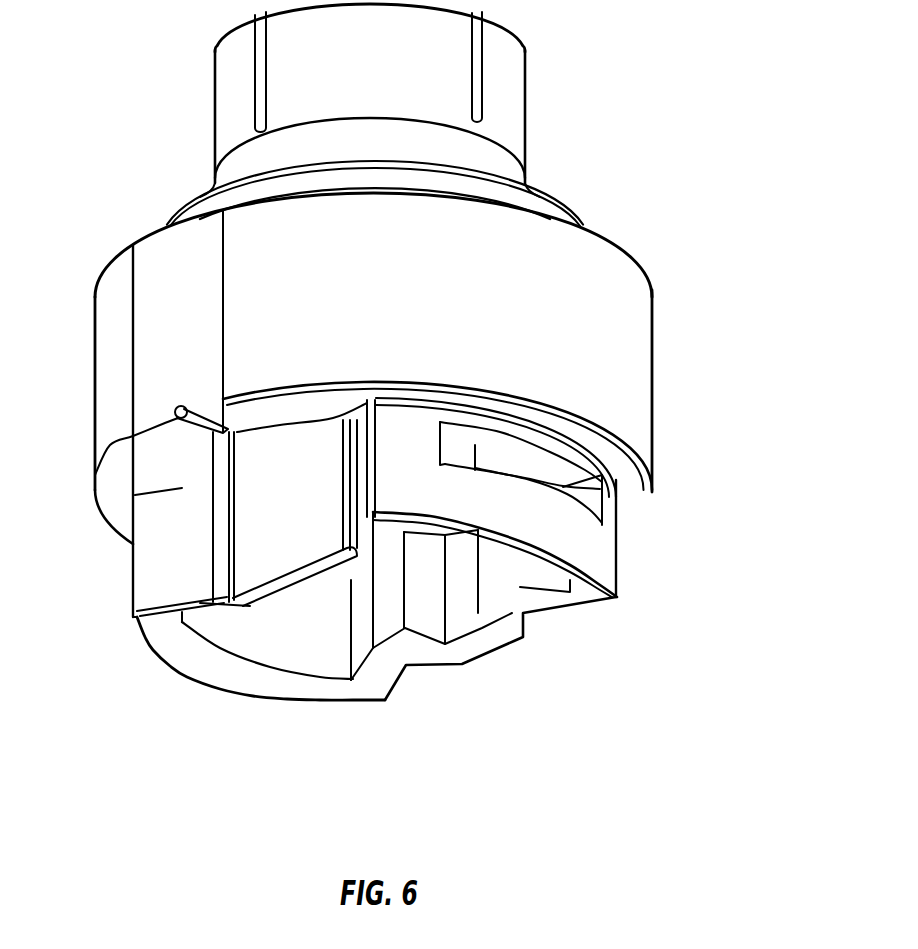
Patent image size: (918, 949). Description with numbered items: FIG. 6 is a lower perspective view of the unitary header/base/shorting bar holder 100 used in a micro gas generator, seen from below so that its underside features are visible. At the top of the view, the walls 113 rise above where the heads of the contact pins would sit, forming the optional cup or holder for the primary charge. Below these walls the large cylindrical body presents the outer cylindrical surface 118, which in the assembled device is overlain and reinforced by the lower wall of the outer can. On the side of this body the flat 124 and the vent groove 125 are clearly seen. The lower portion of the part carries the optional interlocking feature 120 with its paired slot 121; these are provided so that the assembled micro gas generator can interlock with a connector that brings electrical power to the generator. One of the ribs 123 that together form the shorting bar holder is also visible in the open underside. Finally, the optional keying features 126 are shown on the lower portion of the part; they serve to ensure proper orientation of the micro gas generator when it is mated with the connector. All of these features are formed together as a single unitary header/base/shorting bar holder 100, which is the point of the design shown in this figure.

The valve assembly 100 is at (664, 258).
The walls 113 is at (512, 82).
The outer cylindrical surface 118 is at (640, 346).
The interlocking feature 120 is at (603, 553).
The slot 121 is at (595, 487).
The rib 123 is at (333, 587).
The flat 124 is at (158, 238).
The vent groove 125 is at (180, 405).
The keying feature 126 is at (483, 613).